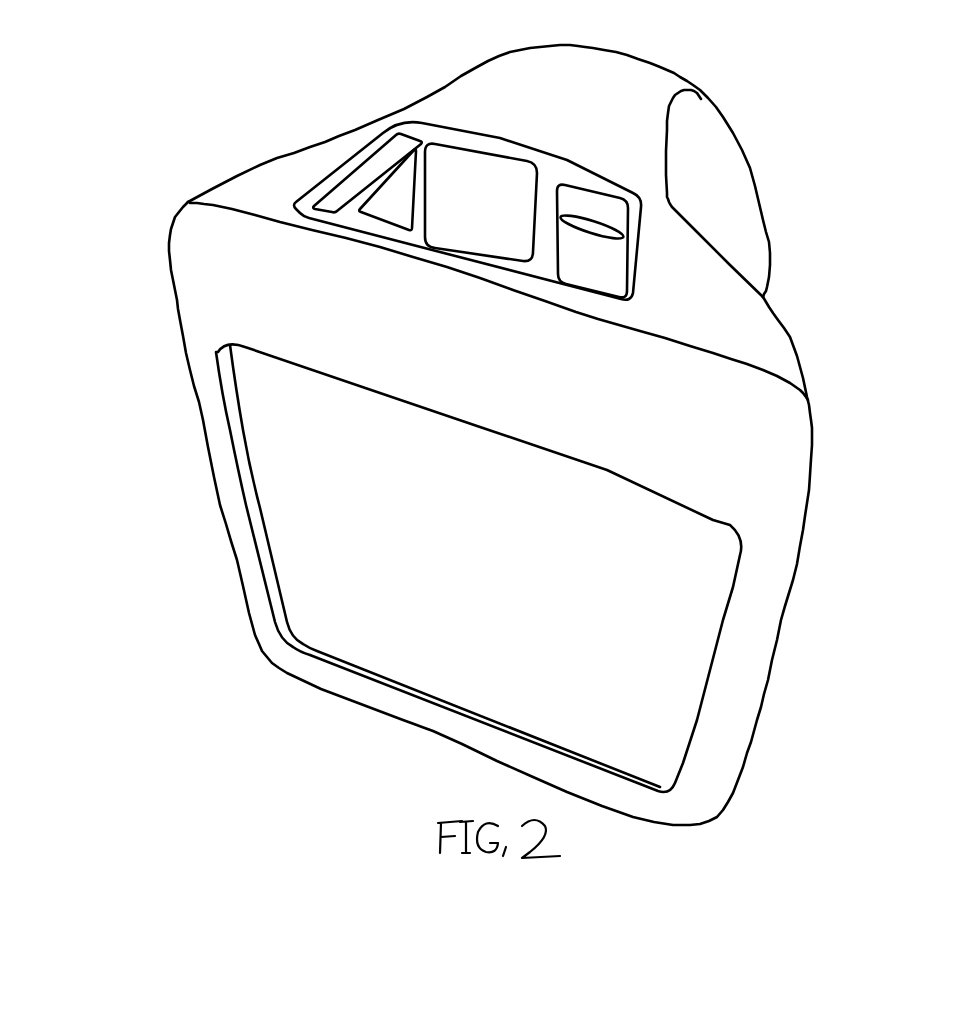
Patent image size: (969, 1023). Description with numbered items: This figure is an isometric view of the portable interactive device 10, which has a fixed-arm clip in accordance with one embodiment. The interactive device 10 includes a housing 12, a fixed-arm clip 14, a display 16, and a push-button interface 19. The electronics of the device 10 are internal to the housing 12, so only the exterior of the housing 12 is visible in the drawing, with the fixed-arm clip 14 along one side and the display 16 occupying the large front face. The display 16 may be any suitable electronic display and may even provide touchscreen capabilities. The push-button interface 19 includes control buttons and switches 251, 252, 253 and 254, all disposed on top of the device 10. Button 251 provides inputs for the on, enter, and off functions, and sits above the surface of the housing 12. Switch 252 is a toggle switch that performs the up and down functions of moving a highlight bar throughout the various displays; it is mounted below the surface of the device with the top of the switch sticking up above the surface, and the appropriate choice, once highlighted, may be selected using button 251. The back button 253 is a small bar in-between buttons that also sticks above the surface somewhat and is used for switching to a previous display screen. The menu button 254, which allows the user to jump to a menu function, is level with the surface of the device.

The interactive device 10 is at (148, 42).
The housing 12 is at (163, 310).
The fixed-arm clip 14 is at (740, 152).
The display 16 is at (435, 535).
The push-button interface 19 is at (686, 290).
The button 251 is at (488, 153).
The switch 252 is at (627, 221).
The back button 253 is at (378, 242).
The menu button 254 is at (371, 166).